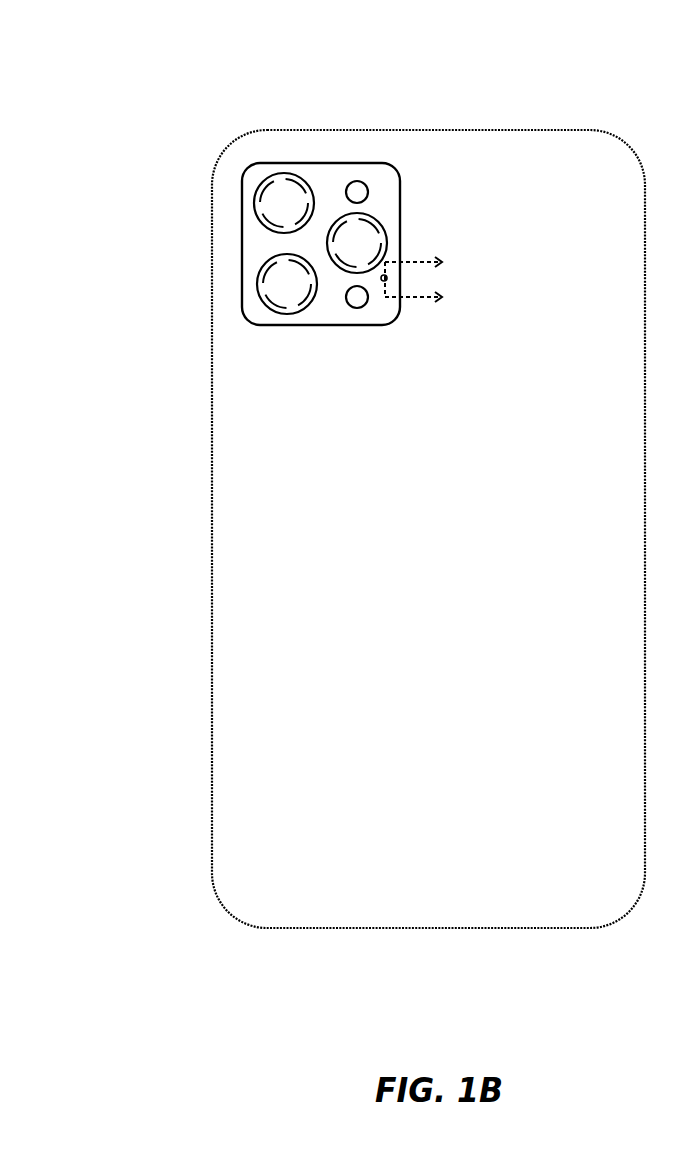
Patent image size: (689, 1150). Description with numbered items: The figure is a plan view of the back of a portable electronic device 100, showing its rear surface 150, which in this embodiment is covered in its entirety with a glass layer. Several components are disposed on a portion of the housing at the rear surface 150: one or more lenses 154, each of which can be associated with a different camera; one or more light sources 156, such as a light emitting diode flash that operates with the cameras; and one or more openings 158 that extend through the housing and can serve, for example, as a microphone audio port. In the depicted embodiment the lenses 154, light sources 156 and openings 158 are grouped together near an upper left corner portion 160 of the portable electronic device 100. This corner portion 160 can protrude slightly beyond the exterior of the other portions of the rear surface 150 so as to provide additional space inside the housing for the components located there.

The portable electronic device 100 is at (163, 117).
The rear surface 150 is at (455, 553).
The lenses 154 is at (282, 183).
The light sources 156 is at (368, 191).
The openings 158 is at (384, 282).
The upper left corner portion 160 is at (337, 163).